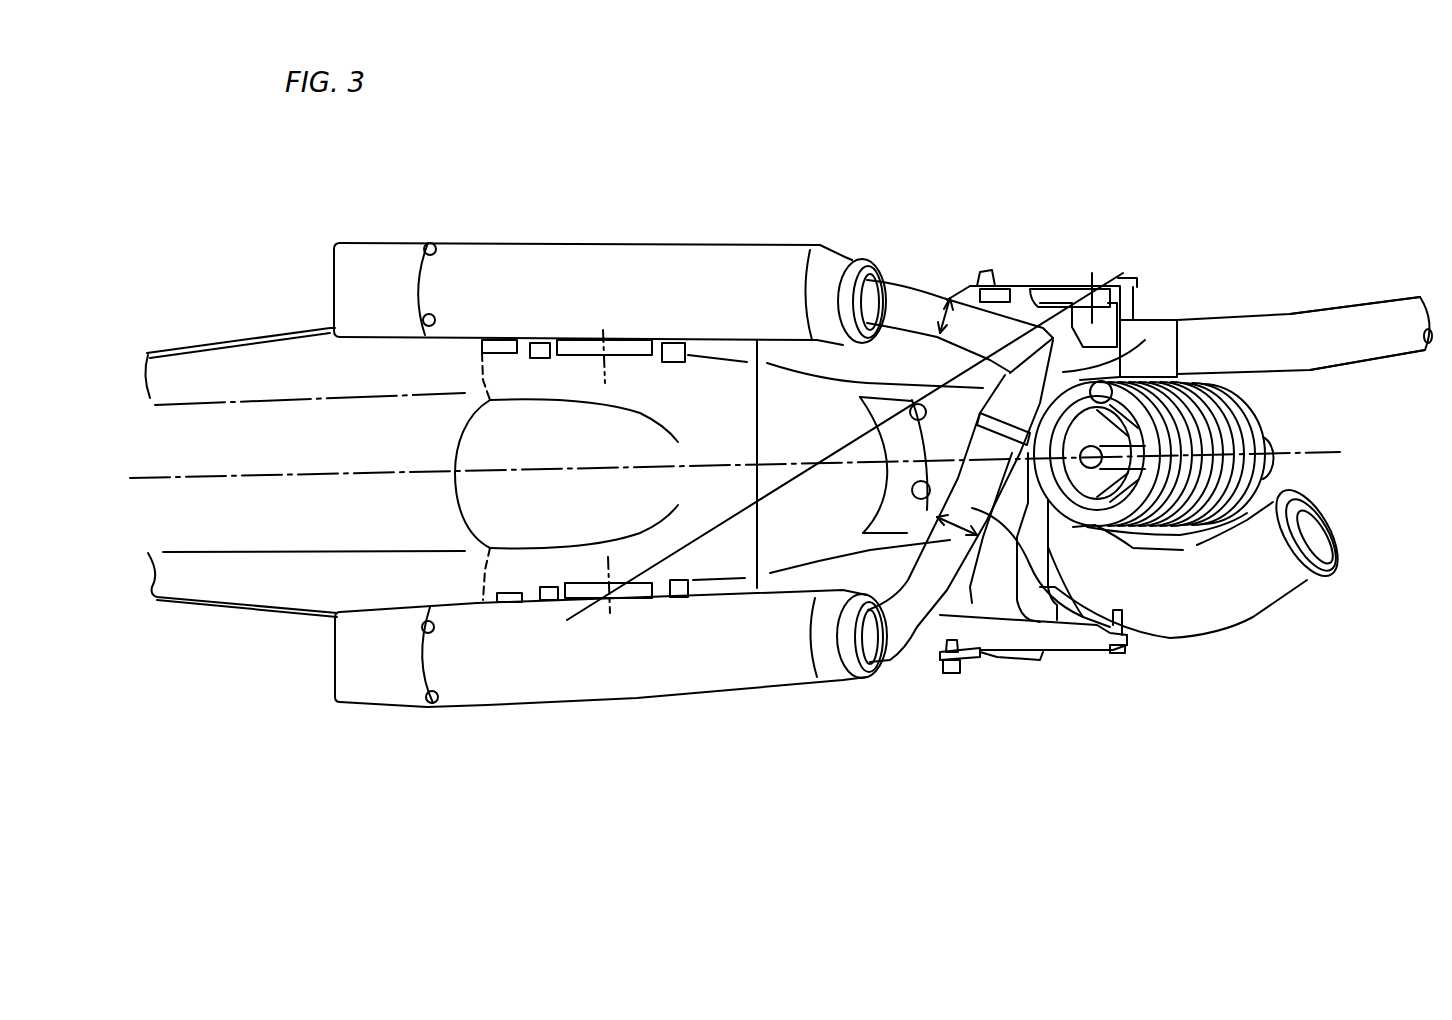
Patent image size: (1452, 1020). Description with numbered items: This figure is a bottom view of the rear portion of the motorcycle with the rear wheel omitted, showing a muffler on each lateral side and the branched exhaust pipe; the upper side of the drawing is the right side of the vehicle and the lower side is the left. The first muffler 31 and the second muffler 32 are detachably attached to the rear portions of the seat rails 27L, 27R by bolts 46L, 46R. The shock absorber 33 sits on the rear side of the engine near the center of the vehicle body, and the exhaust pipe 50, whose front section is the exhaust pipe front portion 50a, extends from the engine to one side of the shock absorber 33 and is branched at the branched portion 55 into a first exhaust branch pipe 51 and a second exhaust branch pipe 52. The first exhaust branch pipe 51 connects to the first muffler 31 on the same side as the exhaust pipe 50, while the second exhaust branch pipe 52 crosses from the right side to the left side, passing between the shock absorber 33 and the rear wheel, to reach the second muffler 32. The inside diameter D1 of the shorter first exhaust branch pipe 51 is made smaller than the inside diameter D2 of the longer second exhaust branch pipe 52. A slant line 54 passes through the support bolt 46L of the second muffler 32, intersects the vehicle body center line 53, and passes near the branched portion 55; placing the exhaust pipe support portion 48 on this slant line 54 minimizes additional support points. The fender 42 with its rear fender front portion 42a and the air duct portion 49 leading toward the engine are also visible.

The seat rail 27L is at (1013, 643).
The seat rail 27R is at (1020, 297).
The first muffler 31 is at (655, 270).
The second muffler 32 is at (667, 683).
The shock absorber 33 is at (1210, 423).
The fender 42 is at (258, 355).
The rear fender front portion 42a is at (933, 590).
The bolt 46R is at (603, 330).
The bolt 46L is at (610, 613).
The exhaust pipe support portion 48 is at (1123, 313).
The air duct portion 49 is at (1257, 593).
The exhaust pipe 50 is at (1246, 318).
The exhaust pipe front portion 50a is at (1300, 340).
The first exhaust branch pipe 51 is at (903, 302).
The second exhaust branch pipe 52 is at (1043, 590).
The vehicle body center line 53 is at (215, 475).
The slant line 54 is at (783, 475).
The branched portion 55 is at (1145, 340).
The inside diameter of first exhaust branch pipe D1 is at (959, 318).
The inside diameter of second exhaust branch pipe D2 is at (951, 540).